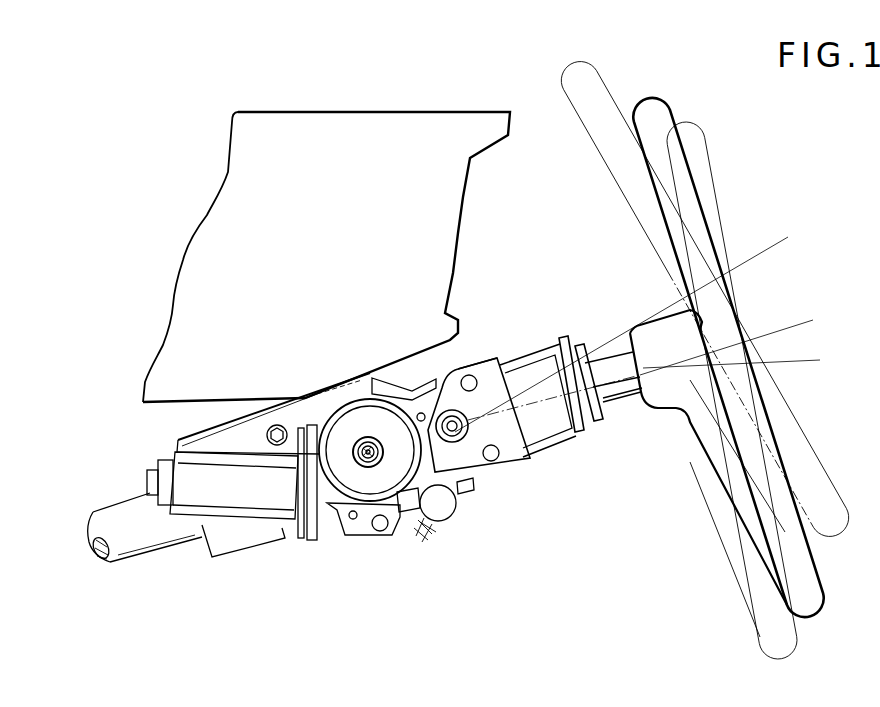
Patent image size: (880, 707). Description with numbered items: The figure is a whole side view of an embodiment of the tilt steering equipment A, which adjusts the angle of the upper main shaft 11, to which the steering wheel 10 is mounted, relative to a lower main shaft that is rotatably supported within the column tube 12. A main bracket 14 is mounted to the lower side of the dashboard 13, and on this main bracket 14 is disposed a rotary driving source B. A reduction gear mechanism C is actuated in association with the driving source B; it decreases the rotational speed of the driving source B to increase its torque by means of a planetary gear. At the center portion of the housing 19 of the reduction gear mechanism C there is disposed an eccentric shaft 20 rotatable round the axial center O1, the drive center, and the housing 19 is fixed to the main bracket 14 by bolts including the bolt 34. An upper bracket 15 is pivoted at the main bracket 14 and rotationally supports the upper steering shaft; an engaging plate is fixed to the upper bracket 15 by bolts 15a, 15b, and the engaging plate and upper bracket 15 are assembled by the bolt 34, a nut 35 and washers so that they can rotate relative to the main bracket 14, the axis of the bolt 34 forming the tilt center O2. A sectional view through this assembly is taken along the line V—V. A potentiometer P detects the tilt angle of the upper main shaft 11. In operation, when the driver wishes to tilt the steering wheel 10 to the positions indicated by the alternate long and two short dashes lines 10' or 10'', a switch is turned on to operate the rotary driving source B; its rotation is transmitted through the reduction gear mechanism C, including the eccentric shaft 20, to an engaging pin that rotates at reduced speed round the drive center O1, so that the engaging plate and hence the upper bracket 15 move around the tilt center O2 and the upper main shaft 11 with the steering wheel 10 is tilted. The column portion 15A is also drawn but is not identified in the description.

The steering wheel 10 is at (727, 357).
The tilted position of steering wheel 10' is at (698, 299).
The tilted position of steering wheel 10'' is at (686, 390).
The upper main shaft 11 is at (624, 387).
The column tube 12 is at (153, 536).
The dashboard 13 is at (452, 229).
The main bracket 14 is at (383, 380).
The upper bracket 15 is at (507, 458).
The bolt 15a is at (474, 368).
The bolt 15b is at (492, 460).
The column tube 15A is at (557, 443).
The housing 19 is at (407, 393).
The eccentric shaft 20 is at (378, 470).
The bolt 34 is at (457, 442).
The nut 35 is at (444, 384).
The tilt steering equipment A is at (545, 472).
The rotary driving source B is at (247, 500).
The reduction gear mechanism C is at (366, 490).
The potentiometer P is at (445, 513).
The axial center (drive center) O1 is at (352, 458).
The tilt center O2 is at (412, 448).
The section line V— V is at (432, 432).